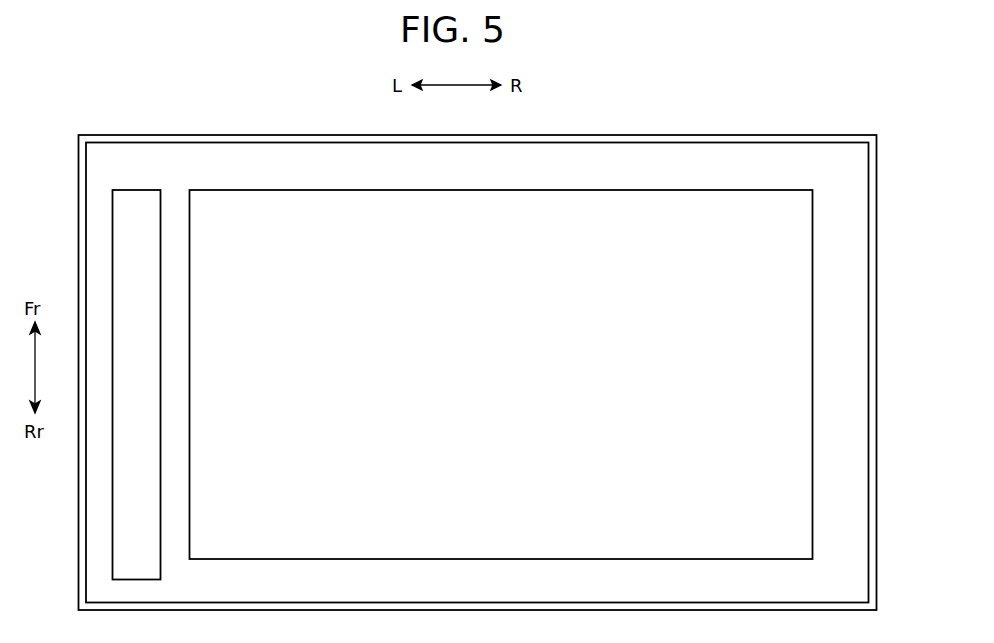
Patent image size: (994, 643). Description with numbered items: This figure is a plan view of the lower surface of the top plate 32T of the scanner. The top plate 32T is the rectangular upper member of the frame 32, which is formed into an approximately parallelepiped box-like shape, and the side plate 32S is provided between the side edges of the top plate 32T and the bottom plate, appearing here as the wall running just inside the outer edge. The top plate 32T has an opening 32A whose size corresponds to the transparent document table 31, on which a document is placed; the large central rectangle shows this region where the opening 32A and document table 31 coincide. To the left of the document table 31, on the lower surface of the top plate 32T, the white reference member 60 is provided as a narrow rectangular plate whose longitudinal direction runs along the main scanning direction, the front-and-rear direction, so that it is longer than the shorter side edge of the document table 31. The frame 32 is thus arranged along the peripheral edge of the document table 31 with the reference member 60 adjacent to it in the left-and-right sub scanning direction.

The reference member 60 is at (112, 252).
The document table 31 is at (812, 266).
The frame 32 is at (771, 130).
The side plate 32S is at (673, 135).
The top plate 32T is at (567, 163).
The opening 32A is at (805, 310).